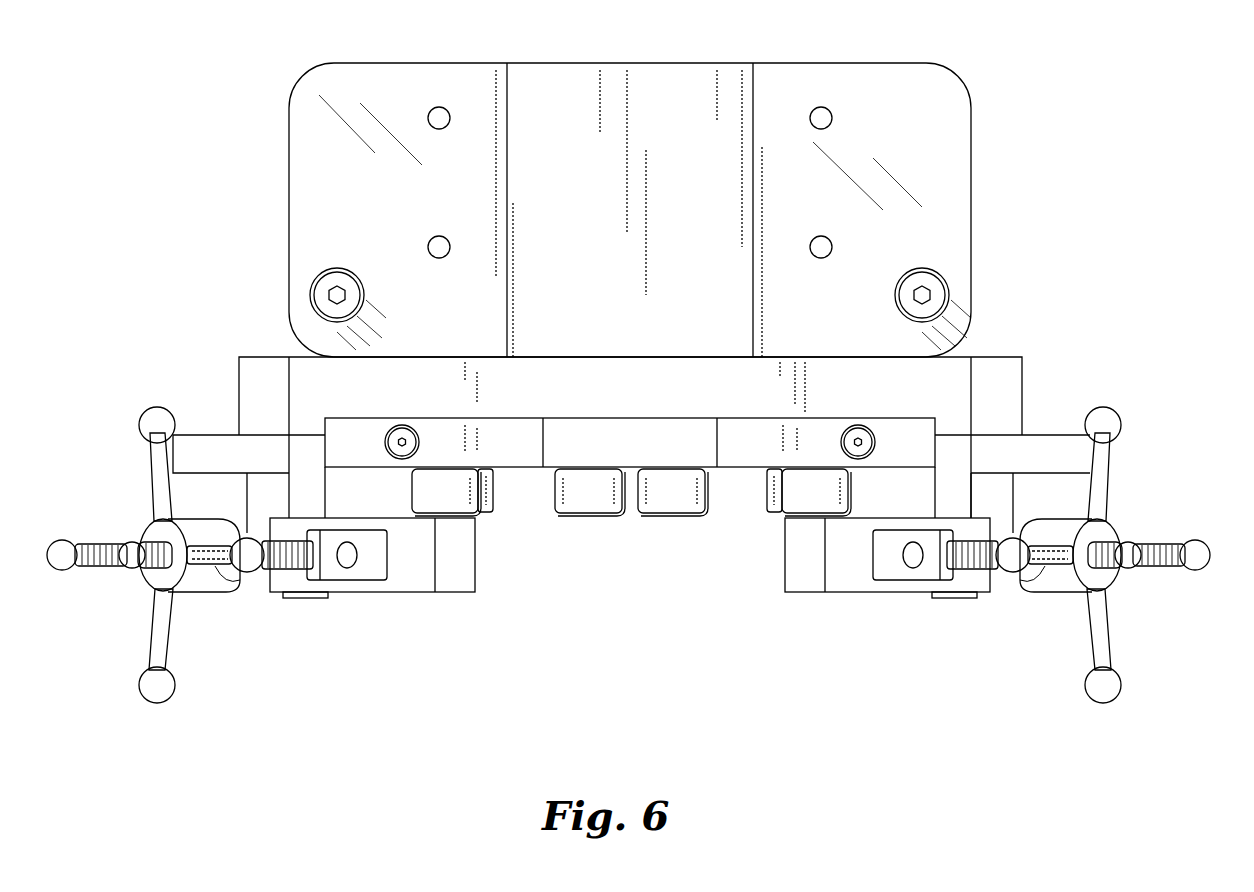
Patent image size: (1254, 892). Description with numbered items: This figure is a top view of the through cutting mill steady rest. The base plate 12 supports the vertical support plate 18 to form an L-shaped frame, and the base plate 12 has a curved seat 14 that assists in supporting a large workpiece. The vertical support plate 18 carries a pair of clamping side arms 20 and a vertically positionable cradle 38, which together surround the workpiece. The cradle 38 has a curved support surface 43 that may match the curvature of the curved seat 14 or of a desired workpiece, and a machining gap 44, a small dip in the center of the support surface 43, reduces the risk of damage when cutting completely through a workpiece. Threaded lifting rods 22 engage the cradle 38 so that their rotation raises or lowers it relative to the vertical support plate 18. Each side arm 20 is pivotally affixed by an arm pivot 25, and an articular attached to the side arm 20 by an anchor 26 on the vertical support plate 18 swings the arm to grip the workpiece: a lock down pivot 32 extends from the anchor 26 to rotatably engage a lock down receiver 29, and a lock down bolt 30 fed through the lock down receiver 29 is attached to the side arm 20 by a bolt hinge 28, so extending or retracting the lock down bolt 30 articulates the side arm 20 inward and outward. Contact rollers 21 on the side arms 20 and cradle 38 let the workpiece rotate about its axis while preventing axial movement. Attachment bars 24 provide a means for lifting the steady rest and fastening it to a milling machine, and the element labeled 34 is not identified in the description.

The base plate 12 is at (320, 192).
The curved seat 14 is at (663, 102).
The vertical support plate 18 is at (345, 383).
The side arm 20 is at (452, 560).
The contact roller 21 is at (670, 500).
The threaded lifting rod 22 is at (420, 443).
The attachment bar 24 is at (932, 285).
The arm pivot 25 is at (960, 485).
The anchor 26 is at (267, 397).
The bolt hinge 28 is at (890, 567).
The lock down receiver 29 is at (198, 583).
The lock down bolt 30 is at (148, 547).
The lock down pivot 32 is at (1052, 498).
The knob 34 is at (1098, 685).
The cradle 38 is at (912, 438).
The curved support surface 43 is at (738, 452).
The machining gap 44 is at (630, 437).